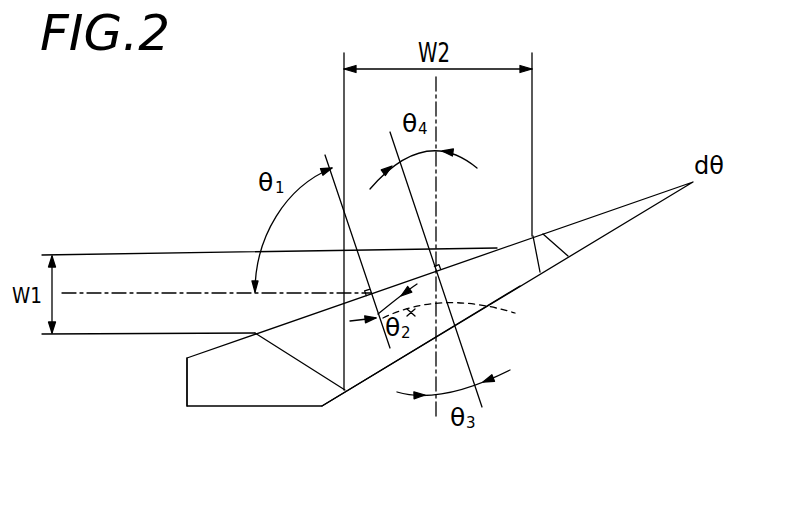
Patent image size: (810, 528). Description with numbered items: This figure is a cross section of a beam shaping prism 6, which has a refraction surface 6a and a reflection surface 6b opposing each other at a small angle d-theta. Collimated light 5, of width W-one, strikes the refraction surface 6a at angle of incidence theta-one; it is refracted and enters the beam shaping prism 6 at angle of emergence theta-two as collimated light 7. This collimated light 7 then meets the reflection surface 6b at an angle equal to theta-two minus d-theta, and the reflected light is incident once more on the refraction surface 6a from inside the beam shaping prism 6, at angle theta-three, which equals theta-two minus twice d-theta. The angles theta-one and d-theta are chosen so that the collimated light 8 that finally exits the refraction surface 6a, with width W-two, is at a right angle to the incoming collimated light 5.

The collimated light 5 is at (127, 268).
The beam shaping prism 6 is at (288, 387).
The refraction surface 6a is at (215, 347).
The reflection surface 6b is at (375, 377).
The collimated light 7 is at (456, 308).
The collimated light 8 is at (520, 143).